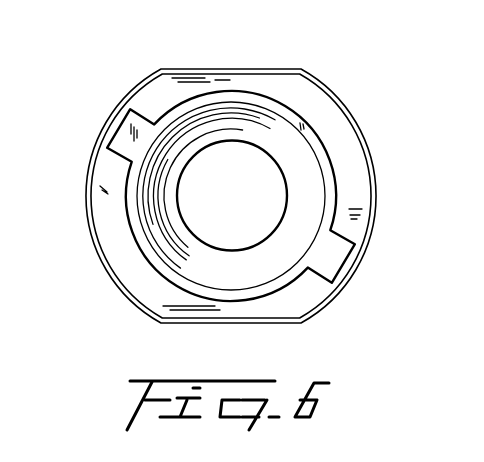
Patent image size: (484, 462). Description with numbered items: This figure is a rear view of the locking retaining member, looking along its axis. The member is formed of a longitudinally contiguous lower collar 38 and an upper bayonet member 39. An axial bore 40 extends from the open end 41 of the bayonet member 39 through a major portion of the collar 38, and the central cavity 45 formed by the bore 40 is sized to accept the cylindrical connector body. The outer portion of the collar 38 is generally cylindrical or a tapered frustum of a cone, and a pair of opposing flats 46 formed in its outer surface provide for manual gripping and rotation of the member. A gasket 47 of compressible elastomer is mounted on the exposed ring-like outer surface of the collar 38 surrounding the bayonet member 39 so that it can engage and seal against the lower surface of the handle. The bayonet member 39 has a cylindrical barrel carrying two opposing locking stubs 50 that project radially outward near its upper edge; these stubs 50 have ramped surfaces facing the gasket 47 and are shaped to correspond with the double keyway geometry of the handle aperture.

The lower collar 38 is at (322, 78).
The upper bayonet member 39 is at (322, 143).
The axial bore 40 is at (257, 114).
The open end 41 is at (127, 260).
The central cavity 45 is at (204, 128).
The opposing flats 46 is at (173, 68).
The gasket 47 is at (146, 92).
The locking stubs 50 is at (118, 147).